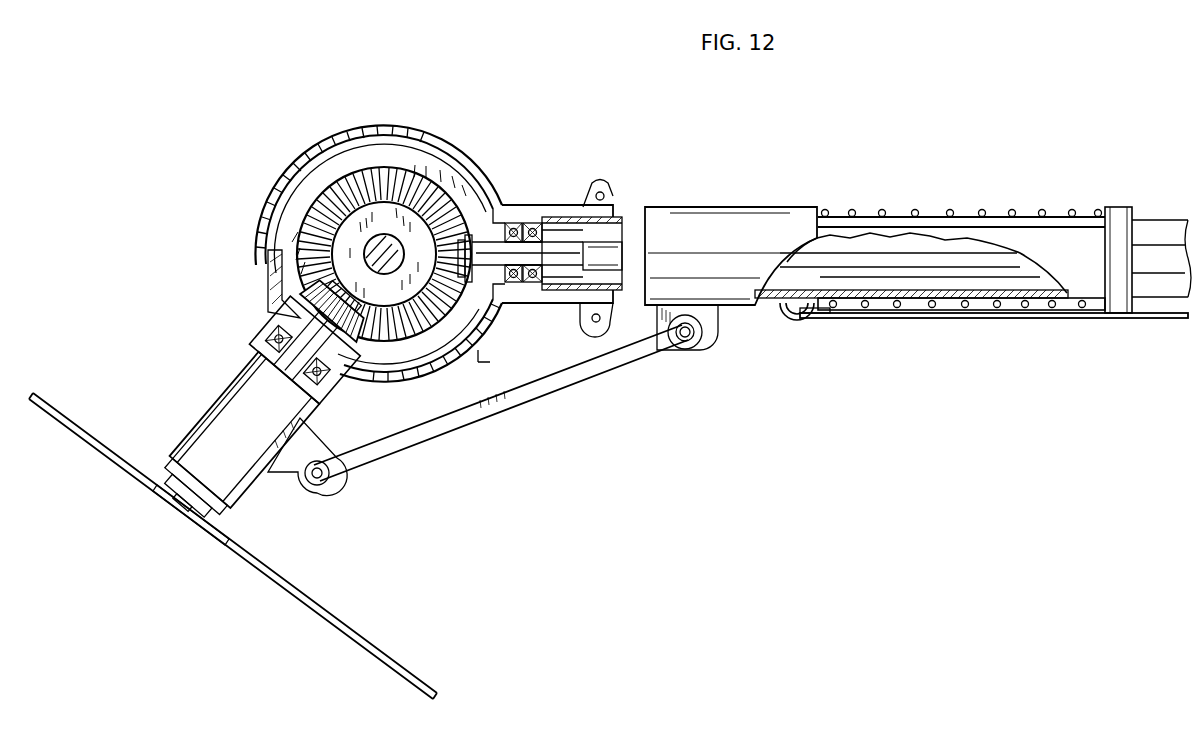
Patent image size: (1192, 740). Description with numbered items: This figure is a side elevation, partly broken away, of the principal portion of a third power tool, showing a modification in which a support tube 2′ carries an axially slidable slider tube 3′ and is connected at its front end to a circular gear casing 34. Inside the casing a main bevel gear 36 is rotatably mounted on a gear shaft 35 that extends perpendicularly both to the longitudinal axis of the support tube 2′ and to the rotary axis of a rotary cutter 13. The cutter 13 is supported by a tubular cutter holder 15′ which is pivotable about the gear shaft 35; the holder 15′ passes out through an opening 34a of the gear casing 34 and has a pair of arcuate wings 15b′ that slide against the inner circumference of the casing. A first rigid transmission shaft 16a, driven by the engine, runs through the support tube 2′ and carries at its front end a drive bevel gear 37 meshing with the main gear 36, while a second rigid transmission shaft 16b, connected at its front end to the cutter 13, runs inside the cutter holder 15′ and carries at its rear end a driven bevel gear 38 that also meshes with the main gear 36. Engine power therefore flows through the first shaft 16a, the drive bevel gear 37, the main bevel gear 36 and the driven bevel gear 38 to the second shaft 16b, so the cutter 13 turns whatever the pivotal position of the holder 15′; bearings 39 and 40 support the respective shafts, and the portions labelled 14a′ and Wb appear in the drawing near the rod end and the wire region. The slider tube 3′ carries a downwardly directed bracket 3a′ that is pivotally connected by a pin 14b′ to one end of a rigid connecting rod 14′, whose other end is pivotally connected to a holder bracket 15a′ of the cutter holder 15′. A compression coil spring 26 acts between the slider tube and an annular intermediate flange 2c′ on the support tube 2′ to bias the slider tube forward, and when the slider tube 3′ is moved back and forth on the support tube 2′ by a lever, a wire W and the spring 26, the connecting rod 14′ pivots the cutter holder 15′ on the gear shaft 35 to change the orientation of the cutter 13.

The rotary cutter 13 is at (365, 637).
The connecting rod 14′ is at (544, 387).
The pivot pin 14a′ is at (330, 492).
The pin 14b′ is at (684, 350).
The cutter holder 15′ is at (216, 404).
The holder bracket 15a′ is at (296, 492).
The arcuate wings 15b′ is at (268, 266).
The first rigid transmission shaft 16a is at (575, 205).
The second rigid transmission shaft 16b is at (270, 342).
The support tube 2′ is at (933, 216).
The annular intermediate flange 2c′ is at (1118, 207).
The compression coil spring 26 is at (1012, 210).
The slider tube 3′ is at (736, 207).
The downwardly directed bracket 3a′ is at (716, 345).
The circular gear casing 34 is at (424, 133).
The opening 34a is at (400, 384).
The gear shaft 35 is at (402, 246).
The main bevel gear 36 is at (384, 168).
The drive bevel gear 37 is at (476, 240).
The driven bevel gear 38 is at (305, 300).
The bearing 39 is at (531, 222).
The bearing 40 is at (325, 382).
The wire W is at (948, 318).
The roller Wb is at (815, 325).